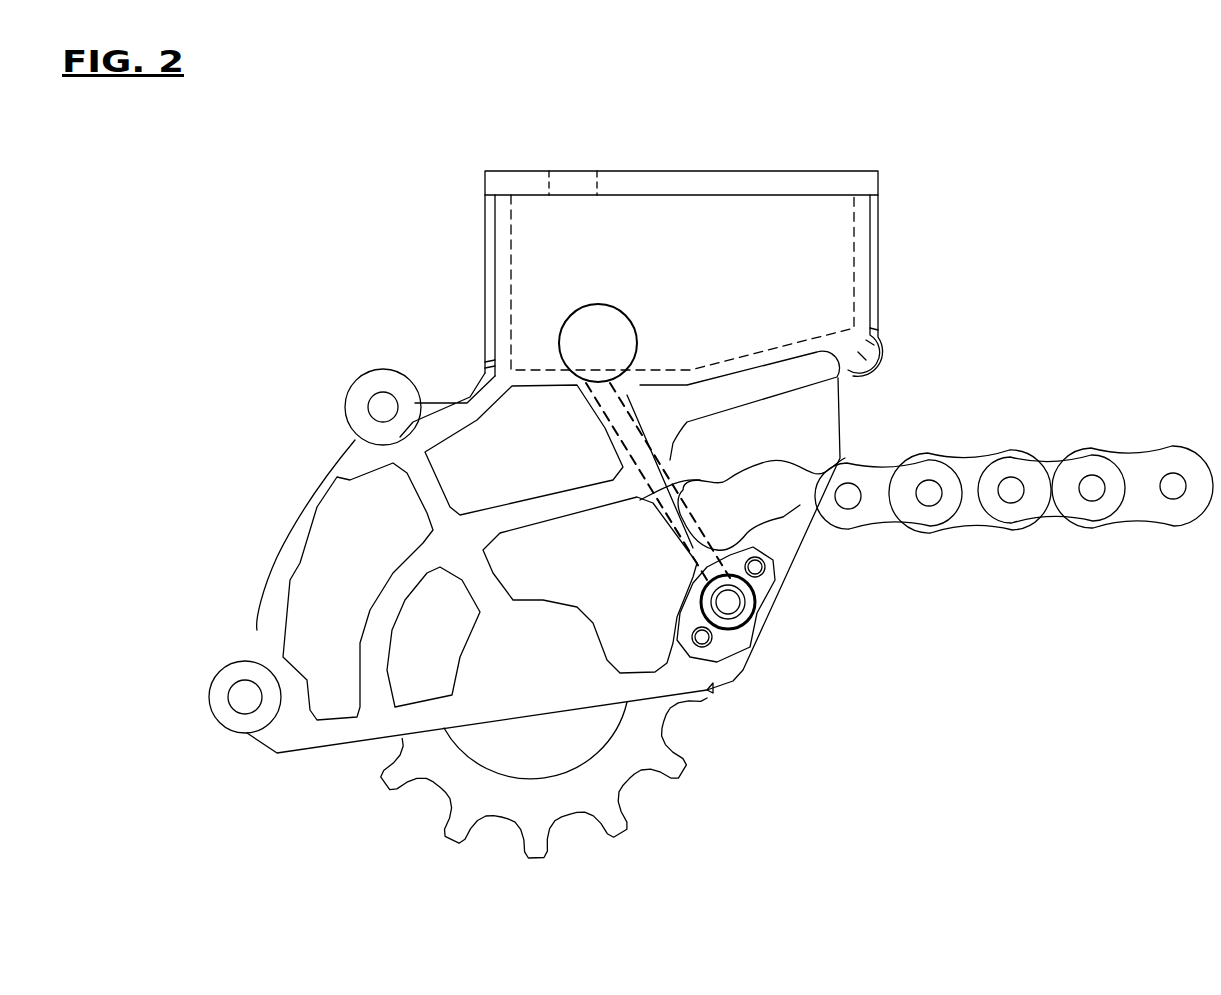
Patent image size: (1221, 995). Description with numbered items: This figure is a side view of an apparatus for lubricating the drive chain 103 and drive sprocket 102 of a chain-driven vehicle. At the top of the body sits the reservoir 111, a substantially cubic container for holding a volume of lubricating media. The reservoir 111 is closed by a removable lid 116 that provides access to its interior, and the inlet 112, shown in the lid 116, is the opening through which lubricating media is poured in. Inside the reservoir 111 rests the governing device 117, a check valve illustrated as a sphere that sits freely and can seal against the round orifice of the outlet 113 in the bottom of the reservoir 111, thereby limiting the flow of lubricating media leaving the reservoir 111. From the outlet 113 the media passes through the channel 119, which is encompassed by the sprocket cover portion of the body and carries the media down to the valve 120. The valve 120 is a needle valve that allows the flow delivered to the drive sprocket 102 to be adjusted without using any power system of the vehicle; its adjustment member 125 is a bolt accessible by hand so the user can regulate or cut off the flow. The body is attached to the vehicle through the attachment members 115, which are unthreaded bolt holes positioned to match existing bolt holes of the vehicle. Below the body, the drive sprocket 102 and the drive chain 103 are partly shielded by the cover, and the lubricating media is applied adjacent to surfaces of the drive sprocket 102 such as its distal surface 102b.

The drive sprocket 102 is at (413, 803).
The distal surface 102b is at (623, 763).
The drive chain 103 is at (960, 447).
The reservoir 111 is at (482, 250).
The inlet 112 is at (584, 177).
The outlet 113 is at (630, 395).
The attachment member 115 is at (363, 398).
The removable lid 116 is at (837, 177).
The governing device 117 is at (615, 315).
The channel 119 is at (683, 480).
The valve 120 is at (757, 581).
The adjustment member 125 is at (735, 608).